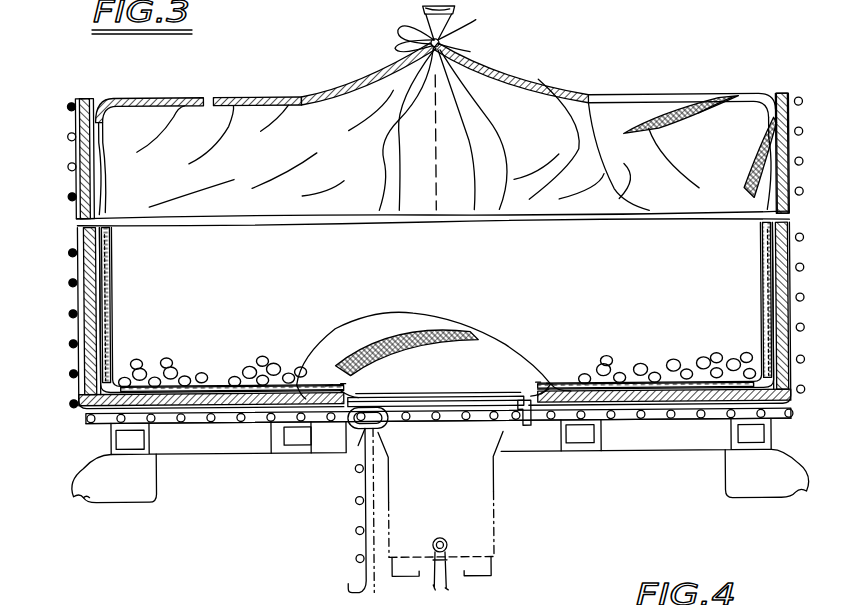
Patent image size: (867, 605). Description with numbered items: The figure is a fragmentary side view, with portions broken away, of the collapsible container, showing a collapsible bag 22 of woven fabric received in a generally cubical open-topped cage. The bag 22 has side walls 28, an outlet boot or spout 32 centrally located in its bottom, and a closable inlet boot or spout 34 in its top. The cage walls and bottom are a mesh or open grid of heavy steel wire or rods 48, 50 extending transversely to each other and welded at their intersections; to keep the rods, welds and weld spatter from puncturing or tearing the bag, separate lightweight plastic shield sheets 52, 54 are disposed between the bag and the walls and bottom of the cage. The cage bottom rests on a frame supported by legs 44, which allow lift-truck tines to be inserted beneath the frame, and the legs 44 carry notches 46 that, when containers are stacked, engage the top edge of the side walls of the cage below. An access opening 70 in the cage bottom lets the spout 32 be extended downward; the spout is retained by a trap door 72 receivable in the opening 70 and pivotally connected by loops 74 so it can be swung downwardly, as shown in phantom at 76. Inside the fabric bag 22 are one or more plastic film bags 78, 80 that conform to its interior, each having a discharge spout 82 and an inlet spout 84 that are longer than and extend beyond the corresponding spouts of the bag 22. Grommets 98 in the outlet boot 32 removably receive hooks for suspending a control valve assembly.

The collapsible bag 22 is at (262, 94).
The side walls 28 is at (718, 150).
The outlet boot or spout 32 is at (497, 492).
The closable inlet boot or spout 34 is at (405, 62).
The legs 44 is at (80, 475).
The notches 46 is at (88, 505).
The wire or rods 48 is at (70, 197).
The wire or rods 50 is at (80, 335).
The shield sheet 52 is at (86, 262).
The shield sheet 54 is at (275, 400).
The access opening 70 is at (423, 390).
The trap door 72 is at (474, 418).
The loops 74 is at (355, 455).
The trap door in phantom position 76 is at (352, 503).
The plastic film bag 78 is at (113, 284).
The plastic film bag 80 is at (113, 330).
The discharge spouts 82 is at (487, 578).
The inlet spout 84 is at (424, 12).
The grommets 98 is at (444, 538).